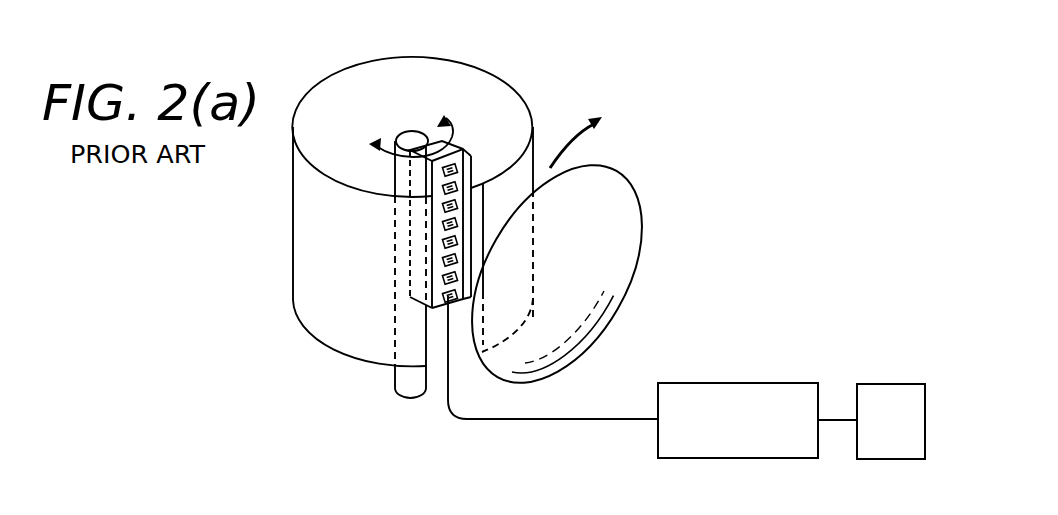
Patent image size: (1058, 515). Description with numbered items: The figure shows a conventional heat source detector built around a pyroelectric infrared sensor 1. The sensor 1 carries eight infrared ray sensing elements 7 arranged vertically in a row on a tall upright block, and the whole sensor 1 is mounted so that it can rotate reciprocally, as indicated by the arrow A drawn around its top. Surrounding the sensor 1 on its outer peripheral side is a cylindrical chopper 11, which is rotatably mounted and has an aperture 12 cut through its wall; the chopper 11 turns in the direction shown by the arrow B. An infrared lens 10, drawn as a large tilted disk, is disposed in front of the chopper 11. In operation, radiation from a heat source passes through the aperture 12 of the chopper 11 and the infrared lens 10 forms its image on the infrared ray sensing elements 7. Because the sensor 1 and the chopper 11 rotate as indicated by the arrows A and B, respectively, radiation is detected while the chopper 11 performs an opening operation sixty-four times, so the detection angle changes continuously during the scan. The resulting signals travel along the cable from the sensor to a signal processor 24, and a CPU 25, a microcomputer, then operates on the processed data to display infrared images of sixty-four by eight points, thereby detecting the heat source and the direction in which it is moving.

The pyroelectric infrared sensor 1 is at (465, 148).
The infrared ray sensing elements 7 is at (428, 215).
The infrared lens 10 is at (634, 208).
The chopper 11 is at (407, 56).
The aperture 12 is at (438, 350).
The signal processor 24 is at (762, 383).
The CPU 25 is at (887, 385).
The arrow indicating reciprocal rotation of the infrared sensor A is at (390, 147).
The arrow indicating rotation of the chopper B is at (603, 133).